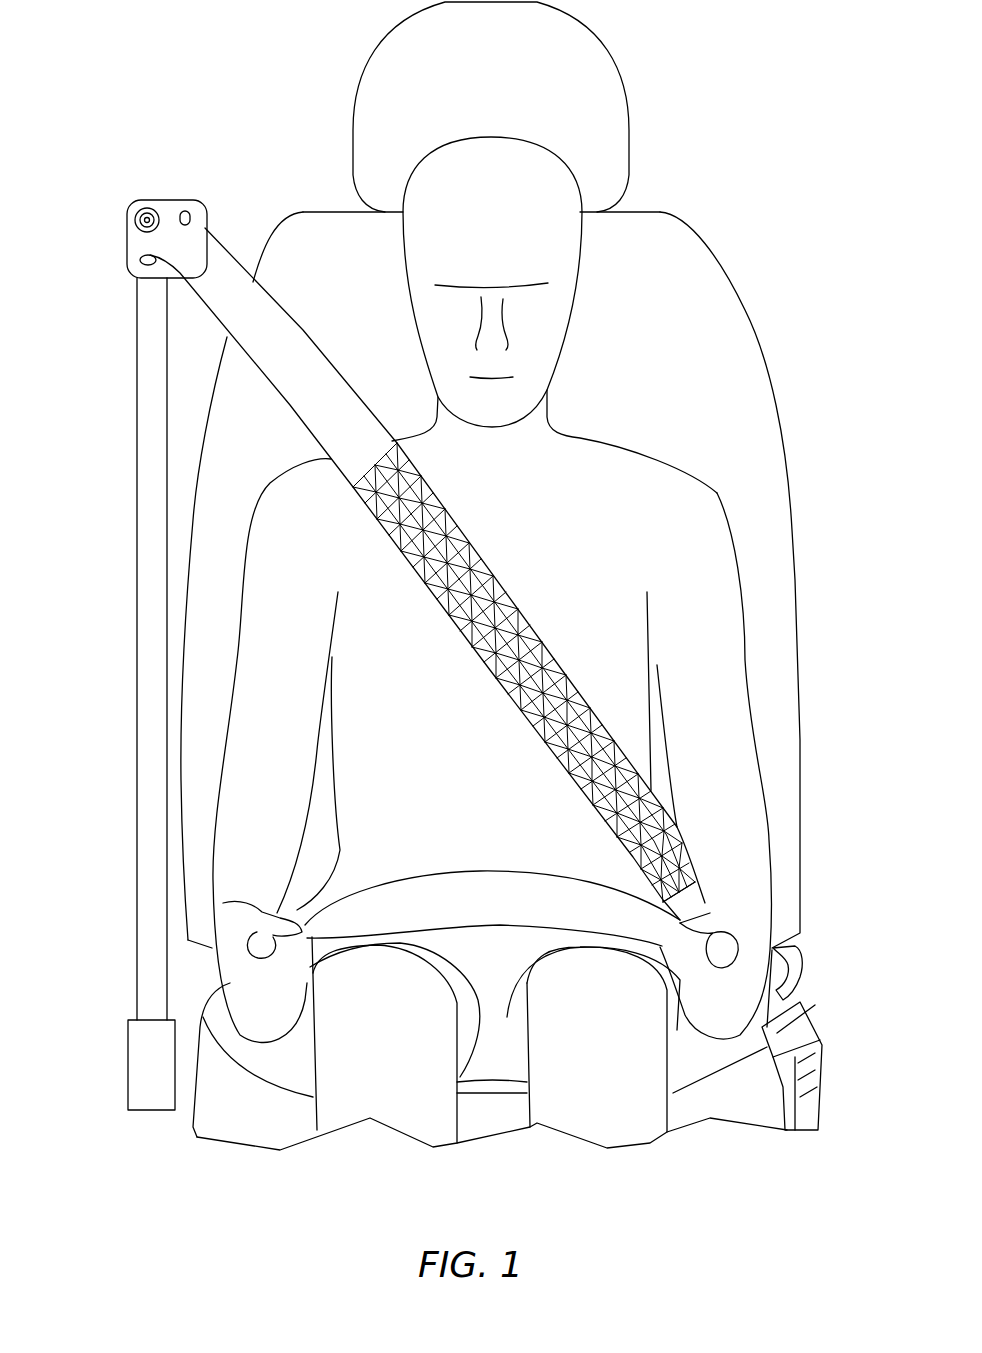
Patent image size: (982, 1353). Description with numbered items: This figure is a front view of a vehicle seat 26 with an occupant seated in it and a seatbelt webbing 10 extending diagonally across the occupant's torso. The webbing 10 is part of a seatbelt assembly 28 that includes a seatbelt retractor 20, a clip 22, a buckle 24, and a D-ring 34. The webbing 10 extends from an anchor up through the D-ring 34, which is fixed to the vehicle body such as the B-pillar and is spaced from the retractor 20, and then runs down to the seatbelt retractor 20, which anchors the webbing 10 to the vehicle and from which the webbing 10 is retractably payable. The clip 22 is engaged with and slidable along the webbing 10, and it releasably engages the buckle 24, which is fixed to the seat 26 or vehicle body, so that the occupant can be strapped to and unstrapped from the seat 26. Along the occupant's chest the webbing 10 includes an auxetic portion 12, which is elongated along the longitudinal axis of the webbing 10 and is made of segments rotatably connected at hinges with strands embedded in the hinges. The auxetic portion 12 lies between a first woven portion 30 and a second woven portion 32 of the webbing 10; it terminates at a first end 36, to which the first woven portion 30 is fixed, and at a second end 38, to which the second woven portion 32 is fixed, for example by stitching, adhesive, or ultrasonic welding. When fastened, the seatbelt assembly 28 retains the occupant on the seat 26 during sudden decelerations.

The seatbelt webbing 10 is at (252, 176).
The auxetic portion 12 is at (512, 662).
The seatbelt retractor 20 is at (128, 1042).
The clip 22 is at (803, 957).
The buckle 24 is at (800, 1015).
The seat 26 is at (754, 327).
The seatbelt assembly 28 is at (95, 250).
The first woven portion 30 is at (293, 357).
The second woven portion 32 is at (690, 907).
The D-ring 34 is at (168, 200).
The first end 36 is at (375, 460).
The second end 38 is at (693, 850).